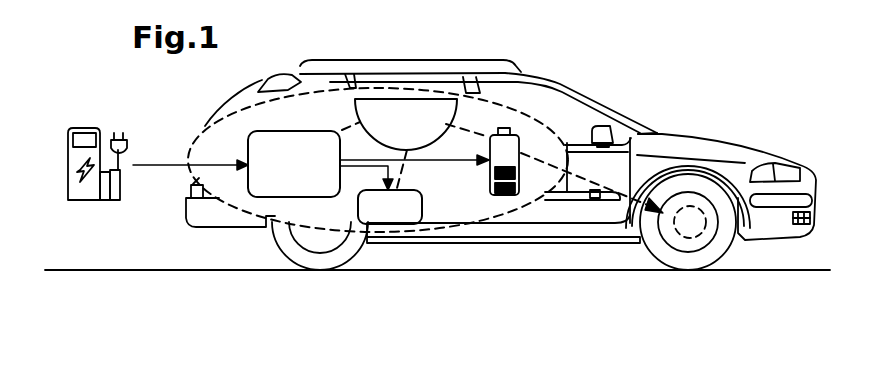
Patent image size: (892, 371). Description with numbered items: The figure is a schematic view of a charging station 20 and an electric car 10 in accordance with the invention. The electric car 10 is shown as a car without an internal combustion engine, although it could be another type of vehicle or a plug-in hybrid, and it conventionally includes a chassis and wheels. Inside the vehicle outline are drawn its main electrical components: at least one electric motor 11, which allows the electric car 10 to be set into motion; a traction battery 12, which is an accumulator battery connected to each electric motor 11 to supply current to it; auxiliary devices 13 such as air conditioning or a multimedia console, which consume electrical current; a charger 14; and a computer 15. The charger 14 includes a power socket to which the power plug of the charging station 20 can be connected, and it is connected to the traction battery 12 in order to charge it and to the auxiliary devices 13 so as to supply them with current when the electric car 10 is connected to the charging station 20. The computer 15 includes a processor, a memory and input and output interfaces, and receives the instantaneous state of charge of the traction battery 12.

The electric car 10 is at (627, 102).
The electric motor 11 is at (693, 237).
The traction battery 12 is at (518, 176).
The auxiliary devices 13 is at (383, 213).
The charger 14 is at (262, 181).
The computer 15 is at (421, 110).
The charging station 20 is at (88, 121).